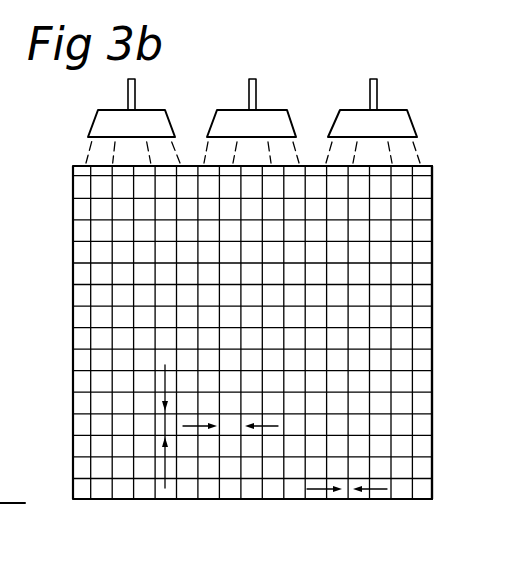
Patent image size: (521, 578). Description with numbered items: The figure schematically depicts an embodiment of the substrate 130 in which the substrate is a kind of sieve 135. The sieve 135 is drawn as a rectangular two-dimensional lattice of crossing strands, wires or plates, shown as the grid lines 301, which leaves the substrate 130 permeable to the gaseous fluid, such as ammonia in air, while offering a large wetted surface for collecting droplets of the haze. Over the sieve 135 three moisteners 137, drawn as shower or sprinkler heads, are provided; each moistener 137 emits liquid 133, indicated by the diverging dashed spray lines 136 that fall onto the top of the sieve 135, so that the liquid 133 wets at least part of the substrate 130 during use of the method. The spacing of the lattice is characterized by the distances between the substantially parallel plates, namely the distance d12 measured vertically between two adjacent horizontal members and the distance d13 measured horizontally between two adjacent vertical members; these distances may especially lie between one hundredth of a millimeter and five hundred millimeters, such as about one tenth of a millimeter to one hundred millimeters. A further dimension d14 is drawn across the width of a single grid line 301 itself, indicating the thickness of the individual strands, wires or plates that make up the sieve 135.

The substrate 130 is at (0, 218).
The liquid 133 is at (88, 158).
The sieve 135 is at (450, 318).
The spray jet 136 is at (429, 149).
The moistener 137 is at (193, 128).
The grid line 301 is at (378, 262).
The distance between substantially parallel plates d12 is at (165, 423).
The distance between substantially parallel plates d13 is at (230, 427).
The grid line width distance d14 is at (349, 491).